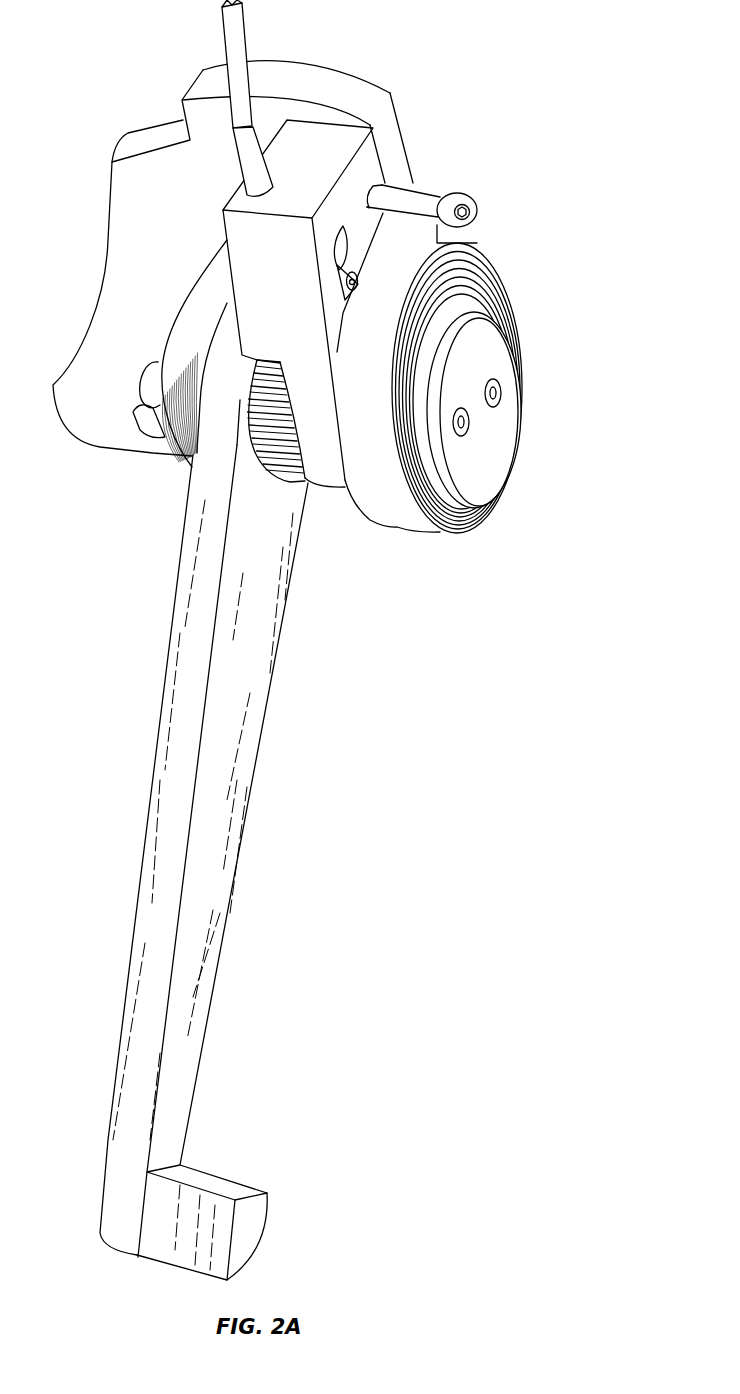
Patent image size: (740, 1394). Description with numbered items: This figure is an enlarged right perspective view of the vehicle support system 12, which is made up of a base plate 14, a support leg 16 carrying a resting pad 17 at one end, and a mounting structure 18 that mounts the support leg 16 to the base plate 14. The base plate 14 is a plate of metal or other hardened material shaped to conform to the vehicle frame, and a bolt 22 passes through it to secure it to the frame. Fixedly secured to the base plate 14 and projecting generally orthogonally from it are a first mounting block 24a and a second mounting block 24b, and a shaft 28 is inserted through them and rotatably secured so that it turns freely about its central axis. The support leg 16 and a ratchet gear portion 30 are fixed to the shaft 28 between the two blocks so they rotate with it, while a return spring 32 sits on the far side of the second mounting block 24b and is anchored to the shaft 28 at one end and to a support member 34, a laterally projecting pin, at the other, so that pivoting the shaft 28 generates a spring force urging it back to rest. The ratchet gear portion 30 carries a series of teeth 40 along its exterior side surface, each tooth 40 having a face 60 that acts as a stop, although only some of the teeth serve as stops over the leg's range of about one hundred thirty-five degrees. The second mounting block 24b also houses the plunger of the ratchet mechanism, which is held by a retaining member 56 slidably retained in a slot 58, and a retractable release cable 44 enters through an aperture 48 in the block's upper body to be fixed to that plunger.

The vehicle support system 12 is at (564, 68).
The base plate 14 is at (87, 442).
The support leg 16 is at (253, 797).
The resting pad 17 is at (230, 1178).
The mounting structure 18 is at (424, 173).
The bolt 22 is at (153, 437).
The first mounting block 24a is at (195, 285).
The second mounting block 24b is at (335, 122).
The shaft 28 is at (520, 377).
The ratchet gear portion 30 is at (300, 485).
The return spring 32 is at (392, 522).
The support member 34 is at (460, 191).
The teeth 40 is at (253, 442).
The release cable 44 is at (222, 43).
The aperture 48 is at (262, 196).
The retaining member 56 is at (343, 264).
The slot 58 is at (338, 227).
The face 60 is at (273, 400).